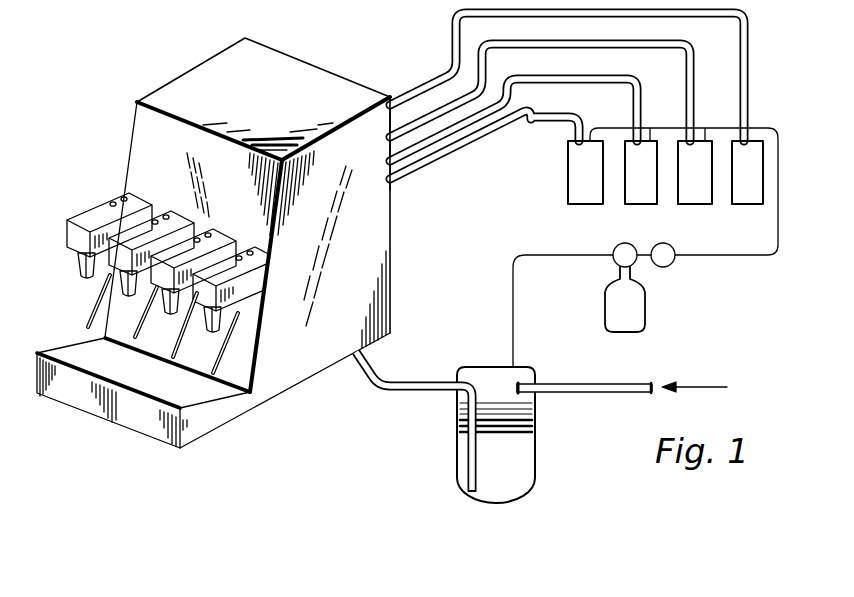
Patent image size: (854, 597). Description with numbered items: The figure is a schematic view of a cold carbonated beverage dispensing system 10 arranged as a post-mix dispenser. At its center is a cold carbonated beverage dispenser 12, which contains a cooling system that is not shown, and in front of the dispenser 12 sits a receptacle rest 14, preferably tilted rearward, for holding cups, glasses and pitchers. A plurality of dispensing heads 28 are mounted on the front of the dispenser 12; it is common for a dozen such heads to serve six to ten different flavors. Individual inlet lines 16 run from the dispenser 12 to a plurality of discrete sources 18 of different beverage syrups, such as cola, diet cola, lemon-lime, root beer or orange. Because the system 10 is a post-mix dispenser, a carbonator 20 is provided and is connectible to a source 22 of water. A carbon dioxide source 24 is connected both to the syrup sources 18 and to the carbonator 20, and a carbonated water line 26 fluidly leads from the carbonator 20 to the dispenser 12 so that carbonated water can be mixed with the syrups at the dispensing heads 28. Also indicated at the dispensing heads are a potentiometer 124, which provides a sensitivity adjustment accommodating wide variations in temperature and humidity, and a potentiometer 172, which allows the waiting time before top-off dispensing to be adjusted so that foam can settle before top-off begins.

The cold carbonated beverage dispensing system 10 is at (407, 258).
The cold carbonated beverage dispenser 12 is at (281, 377).
The receptacle rest 14 is at (222, 388).
The individual inlet lines 16 is at (430, 182).
The discrete sources 18 is at (732, 204).
The carbonator 20 is at (535, 453).
The source of water 22 is at (565, 383).
The carbon dioxide source 24 is at (645, 297).
The carbonated water line 26 is at (385, 380).
The dispensing heads 28 is at (157, 226).
The potentiometer 124 is at (113, 202).
The potentiometer 172 is at (125, 197).